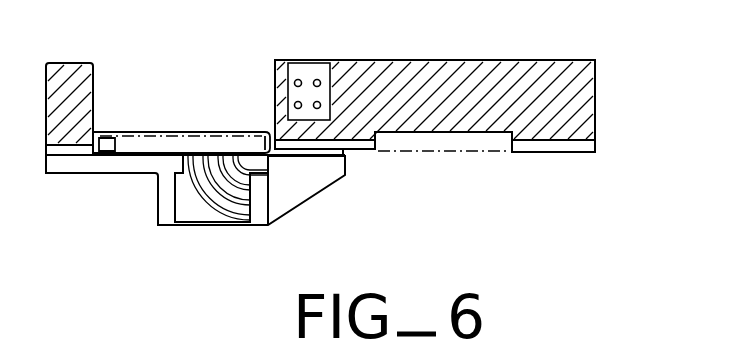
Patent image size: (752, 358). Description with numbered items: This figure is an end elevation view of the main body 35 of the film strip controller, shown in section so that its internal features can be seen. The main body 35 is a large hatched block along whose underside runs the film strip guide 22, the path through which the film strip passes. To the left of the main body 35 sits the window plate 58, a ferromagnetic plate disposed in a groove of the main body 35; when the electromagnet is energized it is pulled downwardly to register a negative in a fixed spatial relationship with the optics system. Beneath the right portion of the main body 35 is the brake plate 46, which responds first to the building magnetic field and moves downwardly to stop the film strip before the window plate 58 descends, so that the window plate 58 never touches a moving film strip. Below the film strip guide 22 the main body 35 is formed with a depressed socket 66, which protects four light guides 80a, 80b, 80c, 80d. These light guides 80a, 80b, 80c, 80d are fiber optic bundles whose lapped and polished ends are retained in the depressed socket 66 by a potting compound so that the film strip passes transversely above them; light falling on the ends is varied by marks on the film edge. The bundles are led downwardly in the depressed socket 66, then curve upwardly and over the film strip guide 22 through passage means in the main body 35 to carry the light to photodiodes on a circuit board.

The film strip guide 22 is at (578, 152).
The main body 35 is at (440, 60).
The brake plate 46 is at (443, 155).
The window plate 58 is at (107, 135).
The depressed socket 66 is at (158, 205).
The light guide 80a is at (196, 195).
The light guide 80b is at (208, 205).
The light guide 80c is at (228, 208).
The light guide 80d is at (240, 212).